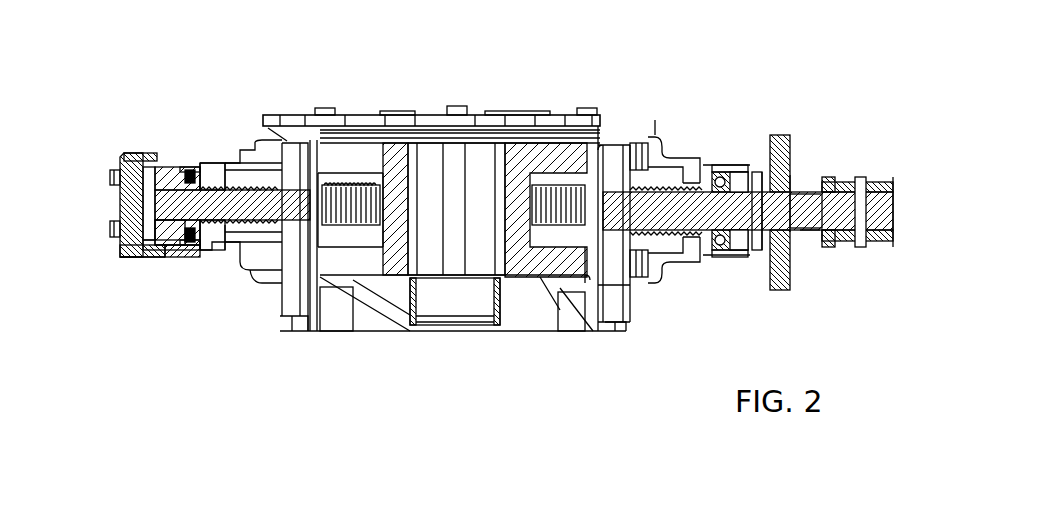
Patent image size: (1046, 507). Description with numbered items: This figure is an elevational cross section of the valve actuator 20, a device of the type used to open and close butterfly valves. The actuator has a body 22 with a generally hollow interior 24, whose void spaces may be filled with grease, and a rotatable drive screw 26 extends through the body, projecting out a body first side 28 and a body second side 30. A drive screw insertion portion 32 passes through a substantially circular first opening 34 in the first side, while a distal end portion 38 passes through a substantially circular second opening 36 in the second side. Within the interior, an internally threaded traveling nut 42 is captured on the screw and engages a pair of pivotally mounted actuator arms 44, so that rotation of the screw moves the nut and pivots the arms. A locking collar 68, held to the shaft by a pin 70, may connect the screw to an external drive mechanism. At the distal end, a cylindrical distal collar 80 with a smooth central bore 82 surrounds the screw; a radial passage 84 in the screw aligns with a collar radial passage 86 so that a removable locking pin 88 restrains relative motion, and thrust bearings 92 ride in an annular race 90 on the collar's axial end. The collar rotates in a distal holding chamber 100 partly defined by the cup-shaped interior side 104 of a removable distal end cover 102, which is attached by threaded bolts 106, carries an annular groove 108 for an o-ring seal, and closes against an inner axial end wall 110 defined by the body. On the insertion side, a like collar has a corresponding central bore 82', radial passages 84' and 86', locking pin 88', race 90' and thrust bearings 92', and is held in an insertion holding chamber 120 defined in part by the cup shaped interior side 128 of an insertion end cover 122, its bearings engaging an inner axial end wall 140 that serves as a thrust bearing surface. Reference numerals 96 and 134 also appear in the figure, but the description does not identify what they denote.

The valve actuator 20 is at (694, 92).
The body 22 is at (628, 290).
The hollow interior 24 is at (355, 258).
The drive screw 26 is at (355, 185).
The body first side 28 is at (665, 285).
The body second side 30 is at (243, 283).
The drive screw insertion portion 32 is at (790, 210).
The first opening 34 is at (650, 155).
The second opening 36 is at (200, 180).
The distal end portion 38 is at (160, 180).
The traveling nut 42 is at (530, 290).
The actuator arms 44 is at (543, 140).
The locking collar 68 is at (850, 177).
The pin 70 is at (860, 247).
The distal collar 80 is at (168, 245).
The central bore 82 is at (166, 293).
The central bore 82' is at (765, 251).
The radial passage 84 is at (176, 205).
The radial passage 84' is at (819, 238).
The collar radial passage 86 is at (415, 163).
The collar radial passage 86' is at (773, 177).
The locking pin 88 is at (152, 261).
The locking pin 88' is at (809, 273).
The race 90 is at (180, 244).
The insertion collar race 90' is at (730, 263).
The thrust bearings 92 is at (212, 224).
The thrust bearings 92' is at (709, 219).
The spacer 96 is at (178, 257).
The distal holding chamber 100 is at (150, 260).
The distal end cover 102 is at (125, 155).
The cup-shaped interior side 104 is at (118, 252).
The threaded bolts 106 is at (110, 158).
The annular groove 108 is at (160, 165).
The inner axial end wall 110 is at (230, 178).
The insertion holding chamber 120 is at (735, 90).
The insertion end cover 122 is at (790, 160).
The cup shaped interior side 128 is at (748, 165).
The shaft end 134 is at (795, 200).
The inner axial end wall 140 is at (705, 165).